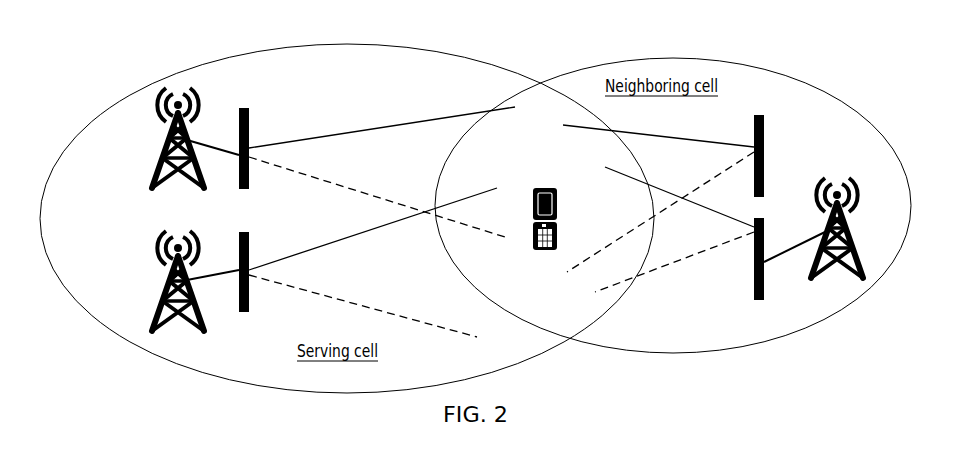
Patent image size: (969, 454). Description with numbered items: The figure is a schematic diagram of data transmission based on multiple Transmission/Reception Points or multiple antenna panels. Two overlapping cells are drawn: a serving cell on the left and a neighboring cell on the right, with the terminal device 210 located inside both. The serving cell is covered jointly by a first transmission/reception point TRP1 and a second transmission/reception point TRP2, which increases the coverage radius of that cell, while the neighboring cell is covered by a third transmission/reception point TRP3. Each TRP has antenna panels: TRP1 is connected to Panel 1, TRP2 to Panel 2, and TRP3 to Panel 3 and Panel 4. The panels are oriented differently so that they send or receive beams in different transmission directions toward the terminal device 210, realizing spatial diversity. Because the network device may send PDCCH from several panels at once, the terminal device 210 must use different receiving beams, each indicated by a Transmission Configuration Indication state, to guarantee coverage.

The terminal device 210 is at (555, 188).
The Panel 1 is at (377, 170).
The Panel 2 is at (368, 262).
The Panel 3 is at (698, 193).
The Panel 4 is at (685, 246).
The first transmission/reception point TRP1 is at (173, 138).
The second transmission/reception point TRP2 is at (168, 281).
The third transmission/reception point TRP3 is at (834, 228).